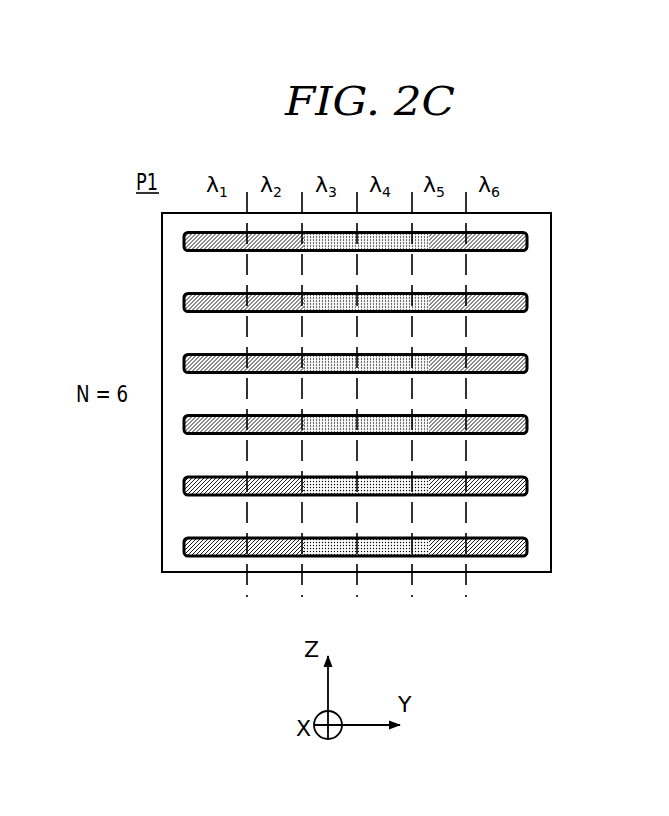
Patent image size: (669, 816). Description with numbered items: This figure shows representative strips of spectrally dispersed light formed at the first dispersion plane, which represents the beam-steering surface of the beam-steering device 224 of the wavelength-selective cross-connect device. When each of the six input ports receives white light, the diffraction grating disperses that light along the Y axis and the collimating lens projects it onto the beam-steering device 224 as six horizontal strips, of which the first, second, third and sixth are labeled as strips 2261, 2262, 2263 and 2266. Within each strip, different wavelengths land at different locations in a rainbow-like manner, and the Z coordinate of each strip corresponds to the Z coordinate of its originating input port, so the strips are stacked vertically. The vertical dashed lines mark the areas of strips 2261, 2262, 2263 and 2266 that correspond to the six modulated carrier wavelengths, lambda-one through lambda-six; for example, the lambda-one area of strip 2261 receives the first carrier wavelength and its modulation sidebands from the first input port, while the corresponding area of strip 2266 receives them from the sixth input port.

The beam-steering device 224 is at (153, 598).
The strip of spectrally dispersed light 2261 is at (527, 242).
The strip of spectrally dispersed light 2262 is at (527, 302).
The strip of spectrally dispersed light 2263 is at (527, 364).
The strip of spectrally dispersed light 2266 is at (527, 547).